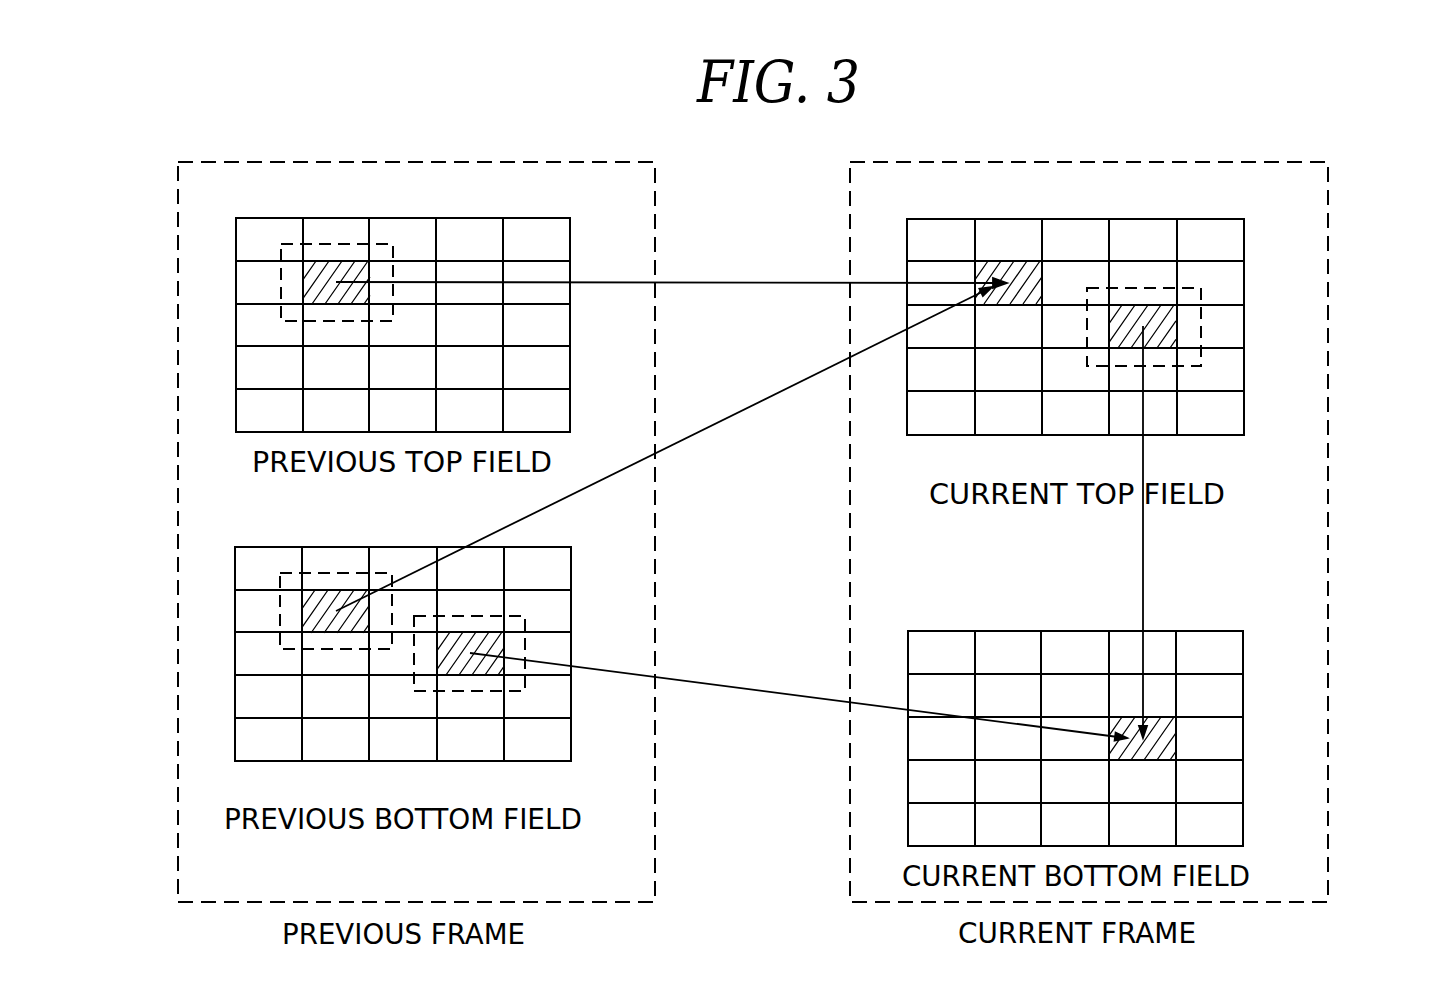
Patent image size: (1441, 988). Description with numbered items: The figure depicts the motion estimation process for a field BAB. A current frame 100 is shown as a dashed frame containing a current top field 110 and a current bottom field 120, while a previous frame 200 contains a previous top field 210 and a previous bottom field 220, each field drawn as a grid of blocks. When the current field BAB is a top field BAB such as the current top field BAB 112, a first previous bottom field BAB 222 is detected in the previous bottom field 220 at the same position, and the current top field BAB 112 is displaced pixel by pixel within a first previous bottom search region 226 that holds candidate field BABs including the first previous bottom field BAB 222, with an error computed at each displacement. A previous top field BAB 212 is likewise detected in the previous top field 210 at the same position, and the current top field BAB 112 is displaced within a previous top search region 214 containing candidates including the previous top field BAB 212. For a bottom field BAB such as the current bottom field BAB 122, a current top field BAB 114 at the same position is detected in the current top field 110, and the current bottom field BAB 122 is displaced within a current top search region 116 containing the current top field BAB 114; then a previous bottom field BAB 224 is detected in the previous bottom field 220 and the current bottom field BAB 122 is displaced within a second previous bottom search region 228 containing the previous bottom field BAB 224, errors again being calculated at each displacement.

The current frame 100 is at (1330, 230).
The current top field 110 is at (1262, 211).
The current top field BAB 112 is at (1021, 284).
The current top field BAB 114 is at (1160, 319).
The current top search region 116 is at (1201, 293).
The current bottom field 120 is at (1261, 624).
The current bottom field BAB 122 is at (1159, 740).
The previous frame 200 is at (655, 225).
The previous top field 210 is at (570, 232).
The previous top field BAB 212 is at (317, 280).
The previous top search region 214 is at (383, 244).
The previous bottom field 220 is at (235, 558).
The first previous bottom field BAB 222 is at (316, 611).
The previous bottom field BAB 224 is at (485, 646).
The first previous bottom search region 226 is at (382, 573).
The second previous bottom search region 228 is at (527, 618).